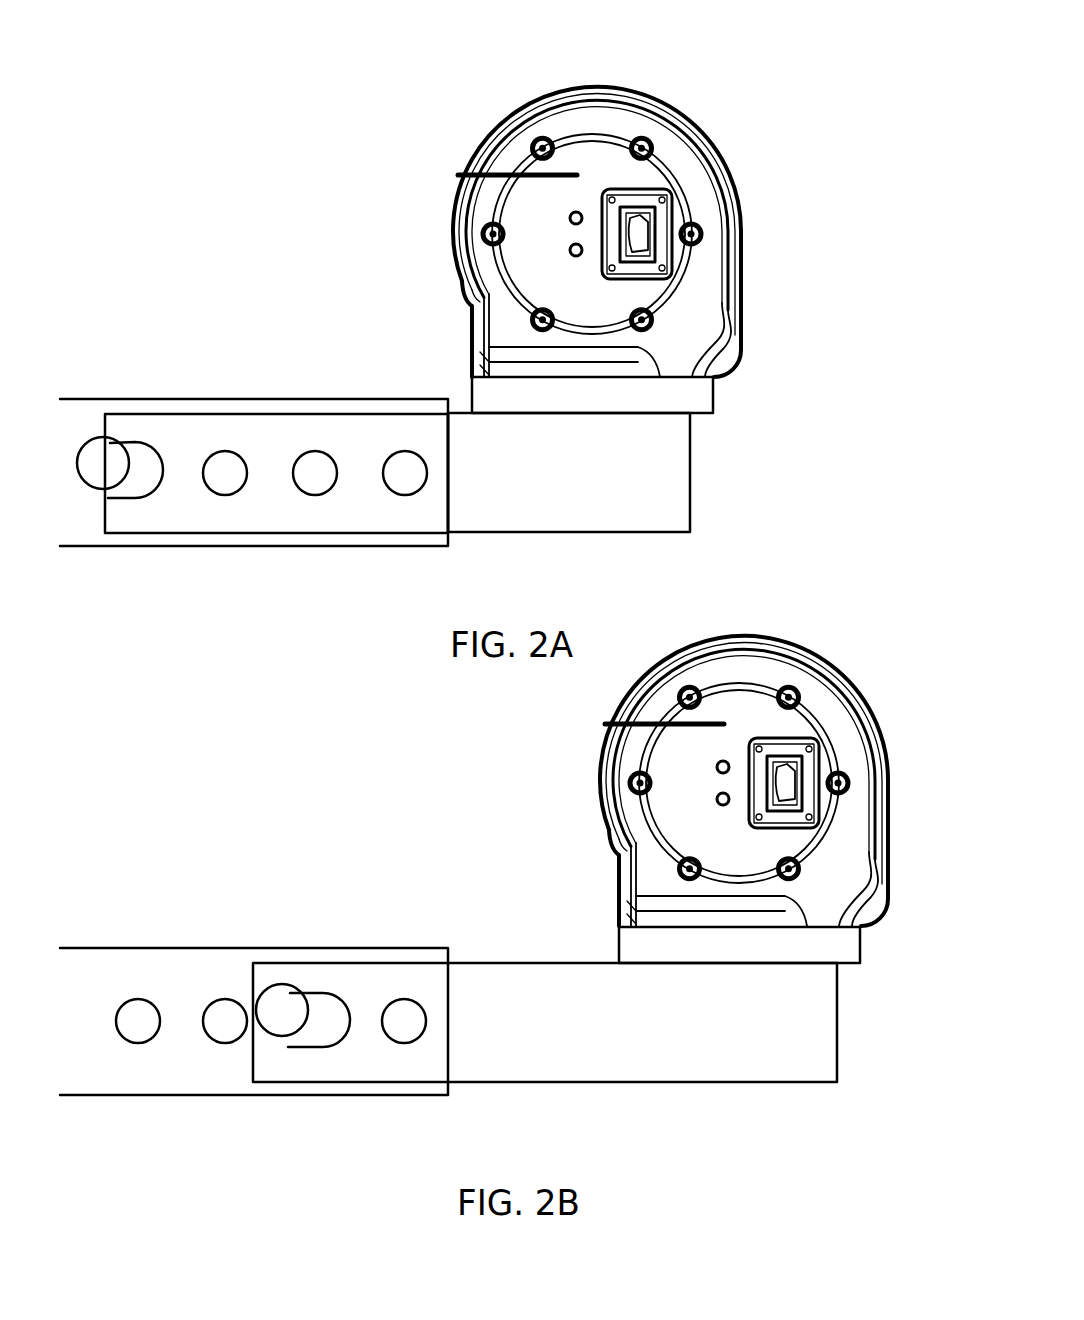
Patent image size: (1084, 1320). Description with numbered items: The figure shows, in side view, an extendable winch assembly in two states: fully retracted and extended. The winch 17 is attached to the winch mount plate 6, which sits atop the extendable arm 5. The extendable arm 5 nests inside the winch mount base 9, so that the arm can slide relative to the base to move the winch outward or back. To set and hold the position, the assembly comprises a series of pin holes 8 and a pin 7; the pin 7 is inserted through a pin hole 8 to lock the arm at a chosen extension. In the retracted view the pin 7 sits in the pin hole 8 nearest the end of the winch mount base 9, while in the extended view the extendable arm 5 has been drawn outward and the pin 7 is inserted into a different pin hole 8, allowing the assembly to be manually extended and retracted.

In FIG. 2A, the extendable arm 5 is at (660, 473).
In FIG. 2B, the extendable arm 5 is at (777, 1035).
In FIG. 2A, the winch mount plate 6 is at (698, 398).
In FIG. 2B, the winch mount plate 6 is at (848, 949).
In FIG. 2A, the pin 7 is at (103, 453).
In FIG. 2B, the pin 7 is at (283, 1004).
In FIG. 2A, the pin holes 8 is at (227, 487).
In FIG. 2B, the pin holes 8 is at (139, 1027).
In FIG. 2A, the winch mount base 9 is at (168, 399).
In FIG. 2B, the winch mount base 9 is at (222, 947).
In FIG. 2A, the winch 17 is at (733, 142).
In FIG. 2B, the winch 17 is at (870, 682).